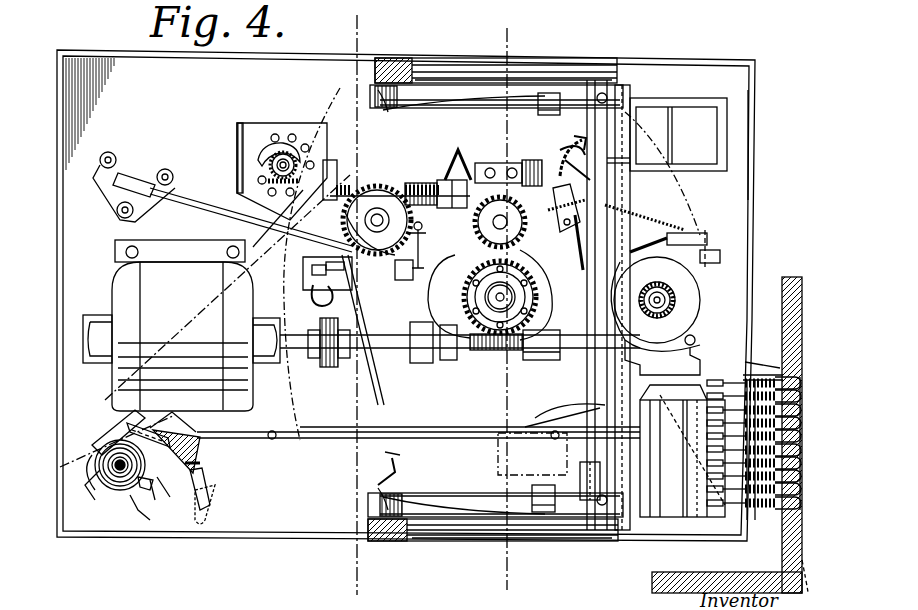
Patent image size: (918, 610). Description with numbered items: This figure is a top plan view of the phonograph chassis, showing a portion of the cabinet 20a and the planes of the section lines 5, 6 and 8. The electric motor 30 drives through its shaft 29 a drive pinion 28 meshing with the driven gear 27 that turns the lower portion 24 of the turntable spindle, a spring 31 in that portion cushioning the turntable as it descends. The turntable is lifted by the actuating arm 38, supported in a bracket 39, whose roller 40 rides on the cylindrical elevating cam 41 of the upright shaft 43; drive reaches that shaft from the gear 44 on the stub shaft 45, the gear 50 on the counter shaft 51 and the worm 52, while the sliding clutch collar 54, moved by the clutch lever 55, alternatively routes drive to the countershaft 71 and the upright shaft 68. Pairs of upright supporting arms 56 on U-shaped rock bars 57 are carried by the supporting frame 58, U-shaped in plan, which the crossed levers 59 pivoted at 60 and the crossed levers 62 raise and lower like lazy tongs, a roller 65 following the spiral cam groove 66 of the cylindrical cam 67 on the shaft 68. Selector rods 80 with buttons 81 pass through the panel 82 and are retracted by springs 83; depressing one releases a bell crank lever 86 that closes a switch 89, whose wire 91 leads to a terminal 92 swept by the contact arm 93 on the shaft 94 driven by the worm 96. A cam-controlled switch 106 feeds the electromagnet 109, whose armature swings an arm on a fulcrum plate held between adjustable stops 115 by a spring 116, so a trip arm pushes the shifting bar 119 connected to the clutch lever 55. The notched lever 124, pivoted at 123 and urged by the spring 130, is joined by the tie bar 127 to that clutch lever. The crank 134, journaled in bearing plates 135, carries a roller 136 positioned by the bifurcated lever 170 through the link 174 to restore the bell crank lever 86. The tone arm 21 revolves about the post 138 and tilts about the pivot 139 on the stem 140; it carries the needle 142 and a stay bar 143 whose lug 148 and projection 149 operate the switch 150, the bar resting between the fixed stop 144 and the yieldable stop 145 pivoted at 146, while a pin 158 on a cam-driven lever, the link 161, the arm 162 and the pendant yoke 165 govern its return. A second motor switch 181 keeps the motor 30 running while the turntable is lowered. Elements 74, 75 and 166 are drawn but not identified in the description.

The section line 5— 5 is at (515, 48).
The section line 6— 6 is at (362, 34).
The section line 8— 8 is at (580, 456).
The portion of the cabinet 20a is at (727, 573).
The tone arm 21 is at (418, 418).
The lower portion of the spindle 24 is at (512, 350).
The driven gear 27 is at (460, 333).
The drive pinion 28 is at (490, 352).
The motor shaft 29 is at (329, 353).
The electric motor 30 is at (181, 336).
The spring 31 is at (468, 355).
The actuating arm 38 is at (180, 242).
The bracket 39 is at (133, 182).
The roller 40 is at (300, 258).
The cylindrical elevating cam 41 is at (334, 298).
The upright cam shaft 43 is at (400, 201).
The gear 44 is at (490, 295).
The upright stub shaft 45 is at (500, 227).
The gear 50 is at (522, 170).
The counter shaft 51 is at (420, 183).
The worm 52 is at (372, 186).
The sliding clutch collar 54 is at (645, 213).
The clutch lever 55 is at (536, 290).
The upright supporting arms 56 is at (375, 90).
The U-shaped rock bar 57 is at (484, 96).
The supporting frame 58 is at (425, 108).
The crossed levers 59 is at (447, 76).
The pivot 60 is at (512, 70).
The crossed levers 62 is at (612, 196).
The roller 65 is at (560, 345).
The spiral-shaped cam groove 66 is at (665, 302).
The cylindrical cam 67 is at (700, 340).
The upright cam shaft 68 is at (670, 296).
The countershaft 71 is at (725, 253).
The panel 74 is at (630, 128).
The block 75 is at (546, 116).
The selector rods 80 is at (760, 457).
The buttons 81 is at (814, 456).
The face plate 82 is at (790, 380).
The springs 83 is at (800, 540).
The bell crank lever 86 is at (682, 460).
The electric switch 89 is at (679, 465).
The wire 91 is at (662, 352).
The terminal 92 is at (291, 134).
The contact arm 93 is at (258, 155).
The shaft 94 is at (270, 167).
The worm 96 is at (251, 220).
The switch 106 is at (328, 200).
The electromagnet 109 is at (445, 182).
The adjustable stops 115 is at (416, 272).
The spring 116 is at (399, 295).
The shifting bar 119 is at (572, 235).
The pivot 123 is at (777, 435).
The notched lever 124 is at (722, 257).
The tie bar 127 is at (695, 234).
The spring 130 is at (660, 150).
The oscillatory crank 134 is at (562, 418).
The bearing plates 135 is at (711, 467).
The roller 136 is at (532, 454).
The supporting post 138 is at (120, 472).
The pivot 139 is at (461, 426).
The upright stem 140 is at (105, 495).
The reproducing needle 142 is at (355, 120).
The stay bar 143 is at (210, 505).
The radial stop 144 is at (160, 500).
The yieldable stop 145 is at (110, 405).
The pivot 146 is at (718, 350).
The offset lug 148 is at (200, 455).
The projection 149 is at (200, 440).
The switch 150 is at (205, 485).
The pin 158 is at (570, 407).
The link 161 is at (472, 432).
The arm 162 is at (118, 428).
The pendant yoke 165 is at (148, 490).
The arm 166 is at (83, 489).
The horizontally-swinging lever 170 is at (416, 471).
The link 174 is at (334, 412).
The second motor switch 181 is at (321, 291).